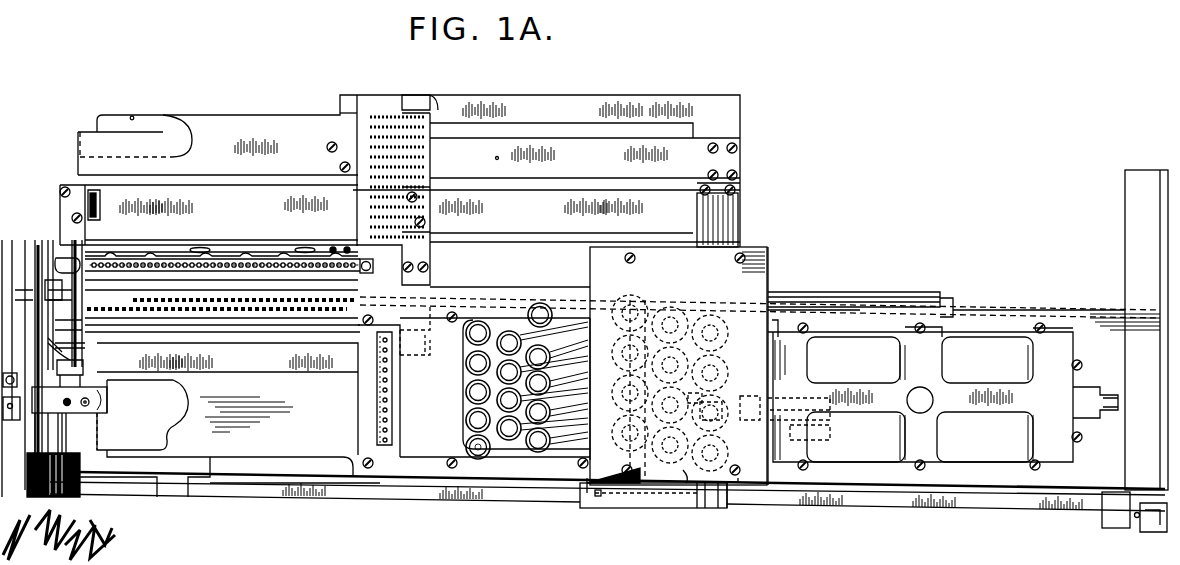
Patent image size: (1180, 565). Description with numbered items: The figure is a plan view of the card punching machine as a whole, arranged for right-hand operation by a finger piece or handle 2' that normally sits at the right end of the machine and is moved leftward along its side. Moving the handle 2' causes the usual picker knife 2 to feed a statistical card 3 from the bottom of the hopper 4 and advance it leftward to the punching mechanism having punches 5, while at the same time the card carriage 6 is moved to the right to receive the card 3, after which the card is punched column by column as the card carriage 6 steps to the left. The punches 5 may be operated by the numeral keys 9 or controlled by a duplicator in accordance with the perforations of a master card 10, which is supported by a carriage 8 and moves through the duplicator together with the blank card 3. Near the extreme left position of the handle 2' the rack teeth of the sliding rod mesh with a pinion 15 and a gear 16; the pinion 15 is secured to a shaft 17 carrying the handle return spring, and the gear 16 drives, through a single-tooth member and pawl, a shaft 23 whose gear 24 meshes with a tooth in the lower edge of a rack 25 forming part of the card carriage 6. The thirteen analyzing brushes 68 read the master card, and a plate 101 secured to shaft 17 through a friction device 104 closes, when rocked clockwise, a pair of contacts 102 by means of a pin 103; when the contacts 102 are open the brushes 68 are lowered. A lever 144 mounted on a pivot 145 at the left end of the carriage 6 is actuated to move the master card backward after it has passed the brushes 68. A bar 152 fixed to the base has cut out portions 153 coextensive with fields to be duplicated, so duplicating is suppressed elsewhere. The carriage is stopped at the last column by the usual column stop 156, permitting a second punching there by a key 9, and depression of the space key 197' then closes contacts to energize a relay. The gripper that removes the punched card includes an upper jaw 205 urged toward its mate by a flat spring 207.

The picker knife 2 is at (1105, 330).
The finger piece or handle 2' is at (1134, 528).
The statistical card 3 is at (100, 433).
The hopper 4 is at (988, 448).
The punches 5 is at (384, 418).
The card carriage 6 is at (282, 418).
The carriage 8 is at (233, 143).
The numeral keys 9 is at (540, 452).
The master card 10 is at (133, 117).
The pinion 15 is at (683, 470).
The gear 16 is at (617, 497).
The shaft 17 is at (697, 480).
The shaft 23 is at (600, 486).
The gear 24 is at (655, 315).
The rack 25 is at (497, 305).
The analyzing brushes 68 is at (427, 172).
The plate 101 is at (722, 430).
The contacts 102 is at (750, 428).
The pin 103 is at (738, 478).
The friction device 104 is at (697, 397).
The lever 144 is at (60, 348).
The pivot 145 is at (62, 262).
The bar 152 is at (228, 250).
The cut out portions 153 is at (280, 253).
The column stop 156 is at (25, 287).
The space key 197' is at (462, 492).
The upper jaw 205 is at (108, 411).
The flat spring 207 is at (108, 392).